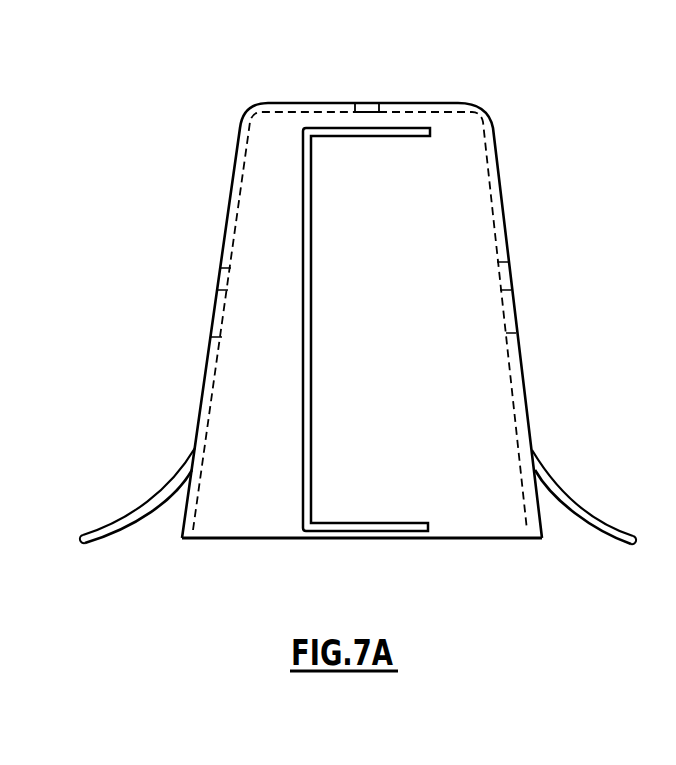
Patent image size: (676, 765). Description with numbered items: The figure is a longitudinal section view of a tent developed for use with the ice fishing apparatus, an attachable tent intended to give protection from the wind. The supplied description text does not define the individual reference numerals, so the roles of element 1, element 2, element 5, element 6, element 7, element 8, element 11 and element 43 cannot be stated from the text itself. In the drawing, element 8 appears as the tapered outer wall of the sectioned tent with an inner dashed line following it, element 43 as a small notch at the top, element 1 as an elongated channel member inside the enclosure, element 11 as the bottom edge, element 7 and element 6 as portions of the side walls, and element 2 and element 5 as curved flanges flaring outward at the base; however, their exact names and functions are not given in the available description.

The channel member 1 is at (383, 132).
The flange 2 is at (573, 500).
The flange end 5 is at (186, 508).
The wall portion 6 is at (215, 337).
The wall portion 7 is at (223, 262).
The body wall 8 is at (260, 210).
The bottom edge 11 is at (372, 532).
The notch 43 is at (368, 110).